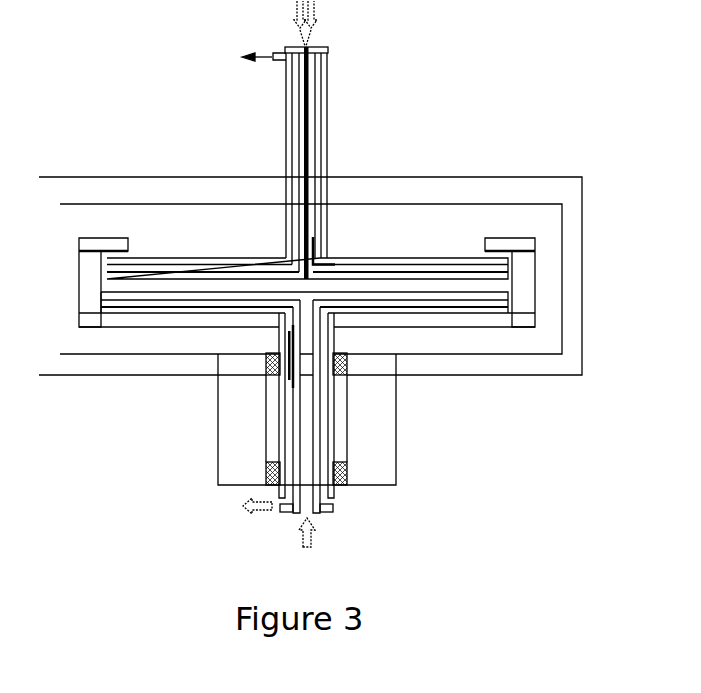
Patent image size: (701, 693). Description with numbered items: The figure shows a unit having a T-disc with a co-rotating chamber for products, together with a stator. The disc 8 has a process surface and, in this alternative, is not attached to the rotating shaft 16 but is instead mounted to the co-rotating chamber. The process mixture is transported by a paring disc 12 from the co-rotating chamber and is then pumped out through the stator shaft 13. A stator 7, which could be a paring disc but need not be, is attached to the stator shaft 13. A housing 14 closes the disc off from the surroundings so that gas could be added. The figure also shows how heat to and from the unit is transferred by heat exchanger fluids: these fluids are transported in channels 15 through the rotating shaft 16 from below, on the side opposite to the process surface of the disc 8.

The stator 7 is at (199, 249).
The disc 8 is at (111, 300).
The paring disc 12 is at (521, 266).
The stator shaft 13 is at (273, 92).
The housing 14 is at (441, 170).
The channels 15 is at (330, 368).
The rotating shaft 16 is at (271, 418).